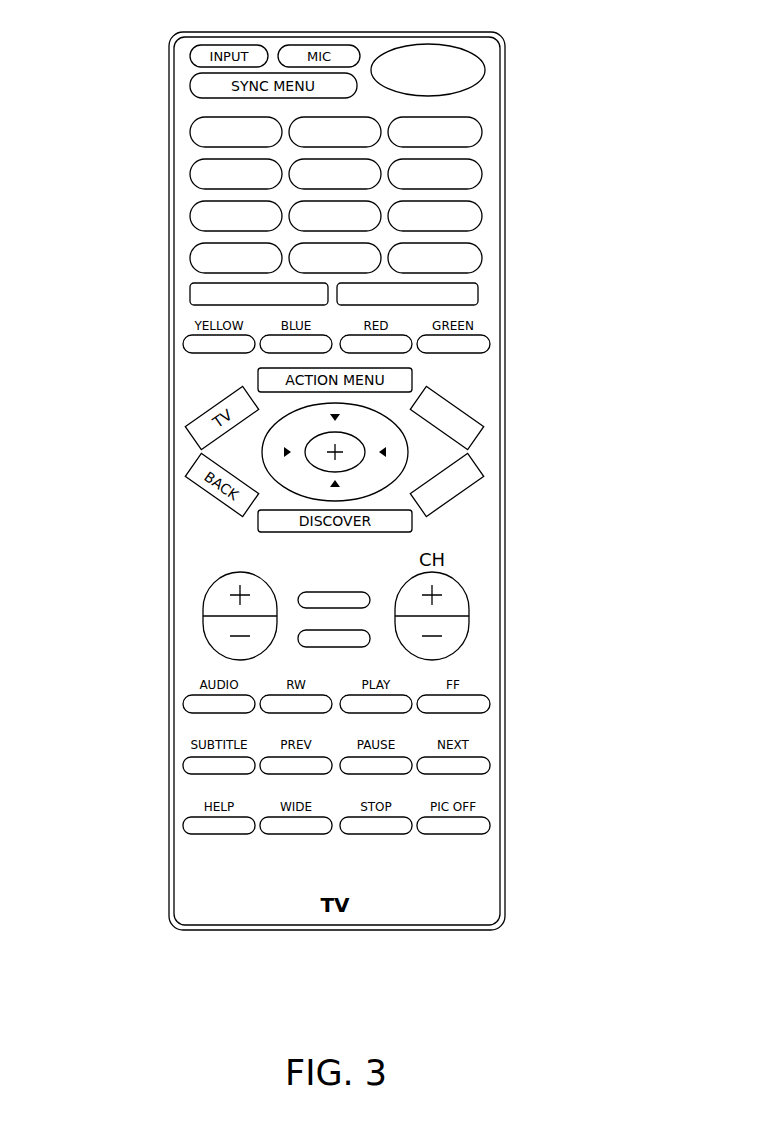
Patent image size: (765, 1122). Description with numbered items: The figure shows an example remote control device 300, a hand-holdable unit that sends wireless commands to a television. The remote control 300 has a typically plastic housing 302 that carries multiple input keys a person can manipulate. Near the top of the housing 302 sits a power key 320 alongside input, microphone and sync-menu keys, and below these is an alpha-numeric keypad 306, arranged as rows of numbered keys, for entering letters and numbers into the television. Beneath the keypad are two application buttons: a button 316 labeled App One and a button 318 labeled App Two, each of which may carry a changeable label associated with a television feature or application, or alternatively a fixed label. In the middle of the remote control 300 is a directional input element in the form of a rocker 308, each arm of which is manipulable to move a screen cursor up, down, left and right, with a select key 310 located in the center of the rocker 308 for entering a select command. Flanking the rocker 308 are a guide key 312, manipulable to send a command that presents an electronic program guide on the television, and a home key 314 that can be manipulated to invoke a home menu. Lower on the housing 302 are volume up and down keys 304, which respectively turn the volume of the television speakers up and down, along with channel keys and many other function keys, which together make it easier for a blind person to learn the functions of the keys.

The remote control device 300 is at (356, 1009).
The housing 302 is at (168, 52).
The volume up and down keys 304 is at (203, 600).
The alpha-numeric keypad 306 is at (197, 157).
The rocker 308 is at (385, 452).
The select key 310 is at (290, 455).
The guide key 312 is at (460, 410).
The home key 314 is at (462, 487).
The button 316 is at (192, 288).
The button 318 is at (476, 292).
The power button 320 is at (466, 88).